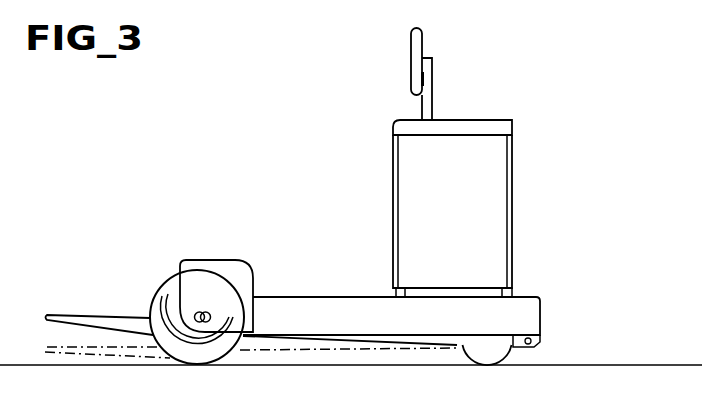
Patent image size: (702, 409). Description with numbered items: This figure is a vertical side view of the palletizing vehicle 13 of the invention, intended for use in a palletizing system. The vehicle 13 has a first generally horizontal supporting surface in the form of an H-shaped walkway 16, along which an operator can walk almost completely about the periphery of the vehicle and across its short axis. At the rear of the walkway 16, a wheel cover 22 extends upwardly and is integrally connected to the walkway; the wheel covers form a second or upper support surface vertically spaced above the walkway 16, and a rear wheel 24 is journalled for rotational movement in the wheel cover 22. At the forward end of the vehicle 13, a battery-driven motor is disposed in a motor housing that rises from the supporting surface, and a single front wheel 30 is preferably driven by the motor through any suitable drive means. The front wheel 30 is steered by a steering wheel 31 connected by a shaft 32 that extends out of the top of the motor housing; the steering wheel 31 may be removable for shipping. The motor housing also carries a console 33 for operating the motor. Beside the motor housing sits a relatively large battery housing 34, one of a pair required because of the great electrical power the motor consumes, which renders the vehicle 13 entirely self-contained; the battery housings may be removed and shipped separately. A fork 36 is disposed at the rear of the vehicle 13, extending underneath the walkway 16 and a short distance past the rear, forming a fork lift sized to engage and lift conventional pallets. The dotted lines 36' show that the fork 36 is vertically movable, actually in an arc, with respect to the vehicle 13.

The vehicle 13 is at (298, 67).
The walkway 16 is at (365, 296).
The wheel cover 22 is at (227, 260).
The rear wheel 24 is at (155, 297).
The front wheel 30 is at (508, 355).
The steering wheel 31 is at (411, 38).
The shaft 32 is at (433, 99).
The console 33 is at (397, 120).
The battery housing 34 is at (468, 211).
The fork 36 is at (252, 313).
The fork in raised position 36' is at (236, 342).